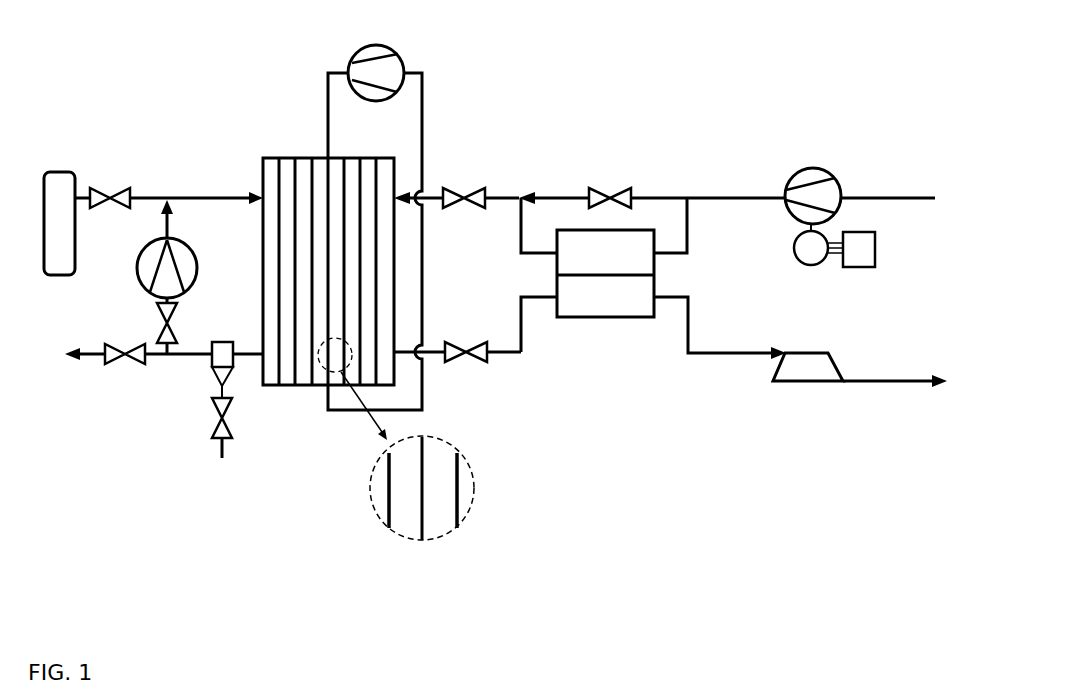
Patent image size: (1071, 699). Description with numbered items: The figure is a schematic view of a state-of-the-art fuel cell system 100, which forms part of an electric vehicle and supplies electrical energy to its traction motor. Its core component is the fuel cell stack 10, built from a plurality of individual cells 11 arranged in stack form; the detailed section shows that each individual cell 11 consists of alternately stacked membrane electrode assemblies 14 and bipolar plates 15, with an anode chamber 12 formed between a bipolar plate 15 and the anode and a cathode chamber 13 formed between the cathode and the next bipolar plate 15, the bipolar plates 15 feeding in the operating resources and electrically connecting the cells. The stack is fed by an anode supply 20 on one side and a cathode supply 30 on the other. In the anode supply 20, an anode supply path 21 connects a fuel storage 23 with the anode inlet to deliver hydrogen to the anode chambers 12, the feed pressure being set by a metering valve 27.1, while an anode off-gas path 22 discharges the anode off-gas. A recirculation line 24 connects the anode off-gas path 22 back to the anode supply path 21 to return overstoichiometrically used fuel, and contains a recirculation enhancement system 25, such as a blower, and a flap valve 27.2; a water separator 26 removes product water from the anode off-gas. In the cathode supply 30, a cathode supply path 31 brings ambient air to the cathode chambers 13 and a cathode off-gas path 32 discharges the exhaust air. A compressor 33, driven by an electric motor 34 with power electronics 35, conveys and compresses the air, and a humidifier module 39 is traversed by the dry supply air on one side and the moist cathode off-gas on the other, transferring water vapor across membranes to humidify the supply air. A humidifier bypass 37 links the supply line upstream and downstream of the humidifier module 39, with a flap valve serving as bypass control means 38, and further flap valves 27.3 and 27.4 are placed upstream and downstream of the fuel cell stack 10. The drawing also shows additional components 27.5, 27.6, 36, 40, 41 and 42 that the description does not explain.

The fuel cell system 100 is at (578, 68).
The fuel cell stack 10 is at (305, 140).
The individual cell 11 is at (302, 175).
The anode chamber 12 is at (403, 467).
The cathode chamber 13 is at (438, 513).
The membrane electrode assembly 14 is at (422, 540).
The bipolar plate 15 is at (457, 481).
The anode supply 20 is at (200, 133).
The anode supply path 21 is at (176, 192).
The anode off-gas path 22 is at (83, 358).
The fuel storage 23 is at (60, 185).
The recirculation line 24 is at (162, 228).
The recirculation enhancement system 25 is at (188, 276).
The water separator 26 is at (210, 366).
The metering valve 27.1 is at (110, 190).
The flap valve 27.2 is at (158, 322).
The flap valve 27.3 is at (466, 212).
The flap valve 27.4 is at (467, 336).
The valve 27.5 is at (118, 365).
The valve 27.6 is at (228, 413).
The cathode supply 30 is at (524, 166).
The cathode supply path 31 is at (880, 194).
The cathode off-gas path 32 is at (862, 378).
The compressor 33 is at (806, 177).
The electric motor 34 is at (795, 249).
The power electronics 35 is at (878, 250).
The expansion device 36 is at (813, 368).
The humidifier bypass 37 is at (656, 194).
The bypass control means 38 is at (604, 188).
The humidifier module 39 is at (615, 306).
The circulation loop 40 is at (436, 110).
The circulation pump 41 is at (401, 57).
The return line 42 is at (430, 176).